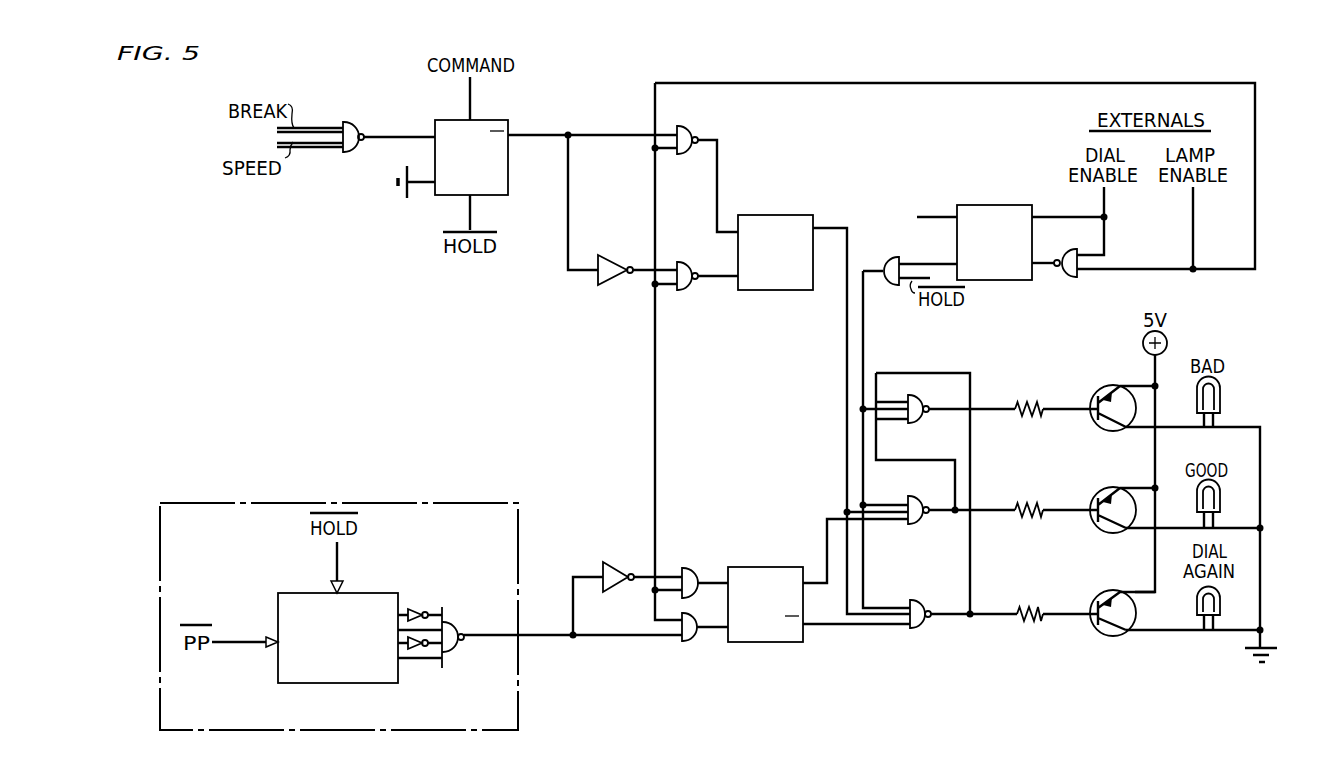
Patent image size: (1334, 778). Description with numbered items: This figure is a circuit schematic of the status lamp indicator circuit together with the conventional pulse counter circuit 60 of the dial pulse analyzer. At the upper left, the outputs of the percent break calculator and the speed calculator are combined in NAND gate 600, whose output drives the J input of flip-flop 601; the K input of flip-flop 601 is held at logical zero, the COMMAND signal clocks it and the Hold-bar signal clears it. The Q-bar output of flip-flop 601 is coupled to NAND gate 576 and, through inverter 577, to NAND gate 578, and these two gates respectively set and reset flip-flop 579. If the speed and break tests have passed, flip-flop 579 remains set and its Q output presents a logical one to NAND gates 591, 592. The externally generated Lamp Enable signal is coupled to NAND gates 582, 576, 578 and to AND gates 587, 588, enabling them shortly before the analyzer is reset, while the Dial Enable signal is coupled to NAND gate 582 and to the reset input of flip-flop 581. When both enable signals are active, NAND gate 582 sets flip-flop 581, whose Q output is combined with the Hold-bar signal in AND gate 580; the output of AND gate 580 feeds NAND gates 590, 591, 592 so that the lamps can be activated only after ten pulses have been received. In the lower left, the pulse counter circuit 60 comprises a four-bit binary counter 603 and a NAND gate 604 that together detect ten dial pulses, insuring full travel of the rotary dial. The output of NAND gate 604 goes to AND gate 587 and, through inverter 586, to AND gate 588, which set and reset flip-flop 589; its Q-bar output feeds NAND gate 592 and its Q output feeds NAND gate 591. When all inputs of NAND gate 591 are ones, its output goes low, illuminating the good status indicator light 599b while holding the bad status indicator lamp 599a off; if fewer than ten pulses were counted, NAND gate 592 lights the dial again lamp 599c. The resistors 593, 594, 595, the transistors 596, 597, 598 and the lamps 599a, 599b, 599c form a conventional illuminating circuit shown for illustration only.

The pulse counter circuit 60 is at (339, 604).
The NAND gate 576 is at (698, 124).
The inverter 577 is at (614, 246).
The NAND gate 578 is at (691, 256).
The flip-flop 579 is at (782, 224).
The AND gate 580 is at (888, 261).
The flip-flop 581 is at (1006, 210).
The NAND gate 582 is at (1067, 280).
The inverter 586 is at (614, 566).
The AND gate 587 is at (694, 642).
The AND gate 588 is at (695, 564).
The flip-flop 589 is at (766, 572).
The NAND gate 590 is at (916, 399).
The NAND gate 591 is at (920, 491).
The NAND gate 592 is at (921, 594).
The resistor 593 is at (1027, 394).
The resistor 594 is at (1030, 495).
The resistor 595 is at (1031, 600).
The transistor 596 is at (1112, 388).
The transistor 597 is at (1113, 489).
The transistor 598 is at (1116, 594).
The "bad" status indicator lamp 599a is at (1221, 401).
The "good" status indicator light 599b is at (1220, 498).
The "dial again" status indicator lamp 599c is at (1199, 609).
The NAND gate 600 is at (360, 145).
The flip-flop 601 is at (508, 168).
The 4-bit binary counter 603 is at (363, 600).
The NAND gate 604 is at (451, 632).